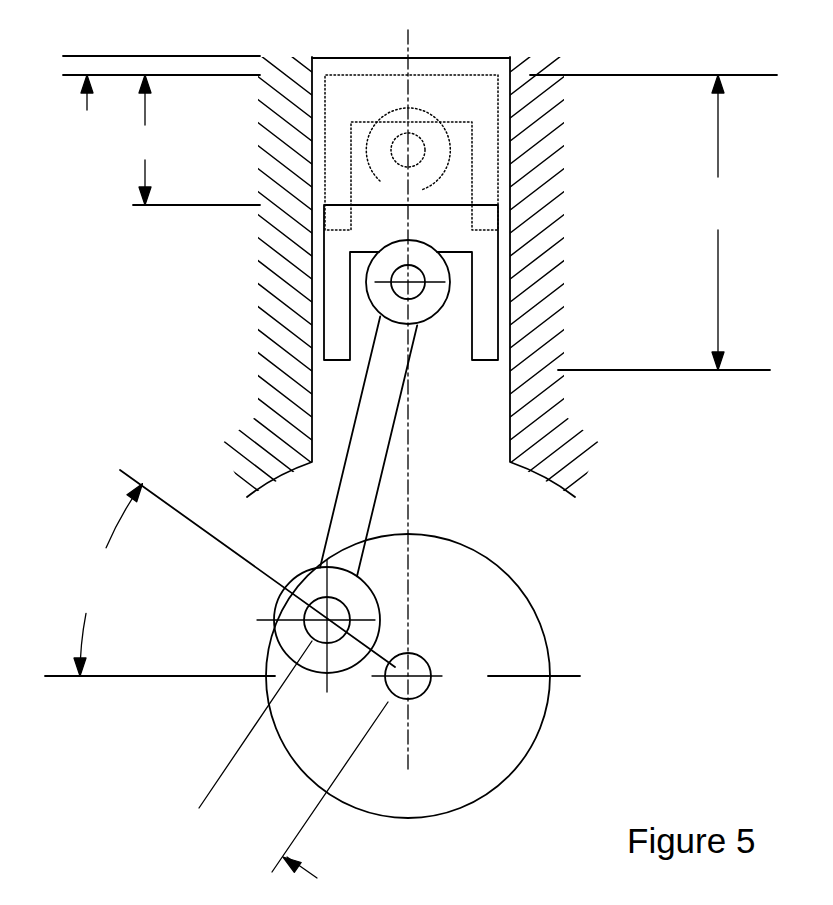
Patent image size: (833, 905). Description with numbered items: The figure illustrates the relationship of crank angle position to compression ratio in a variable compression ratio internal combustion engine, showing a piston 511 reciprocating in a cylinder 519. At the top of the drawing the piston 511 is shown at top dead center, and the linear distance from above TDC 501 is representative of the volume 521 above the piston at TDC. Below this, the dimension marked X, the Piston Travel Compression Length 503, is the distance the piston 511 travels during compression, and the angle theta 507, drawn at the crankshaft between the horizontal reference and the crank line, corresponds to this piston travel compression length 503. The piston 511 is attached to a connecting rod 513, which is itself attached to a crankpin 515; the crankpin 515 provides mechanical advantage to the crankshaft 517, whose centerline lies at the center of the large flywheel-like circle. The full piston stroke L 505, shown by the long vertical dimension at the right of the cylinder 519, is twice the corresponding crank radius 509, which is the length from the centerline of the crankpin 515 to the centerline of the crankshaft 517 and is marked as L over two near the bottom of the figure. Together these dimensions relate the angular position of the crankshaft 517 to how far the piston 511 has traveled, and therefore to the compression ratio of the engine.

The TDC 501 is at (87, 56).
The Piston Travel Compression Length X 503 is at (130, 136).
The full piston stroke L 505 is at (718, 205).
The angle theta 507 is at (62, 563).
The crank radius 509 is at (203, 797).
The piston 511 is at (483, 243).
The connecting rod 513 is at (365, 443).
The crankpin 515 is at (318, 620).
The crankshaft 517 is at (412, 667).
The cylinder 519 is at (505, 133).
The volume above piston at TDC 521 is at (437, 63).